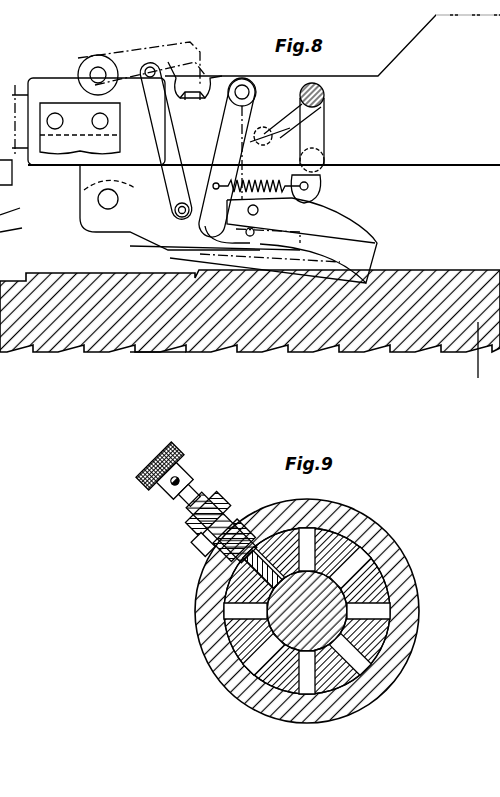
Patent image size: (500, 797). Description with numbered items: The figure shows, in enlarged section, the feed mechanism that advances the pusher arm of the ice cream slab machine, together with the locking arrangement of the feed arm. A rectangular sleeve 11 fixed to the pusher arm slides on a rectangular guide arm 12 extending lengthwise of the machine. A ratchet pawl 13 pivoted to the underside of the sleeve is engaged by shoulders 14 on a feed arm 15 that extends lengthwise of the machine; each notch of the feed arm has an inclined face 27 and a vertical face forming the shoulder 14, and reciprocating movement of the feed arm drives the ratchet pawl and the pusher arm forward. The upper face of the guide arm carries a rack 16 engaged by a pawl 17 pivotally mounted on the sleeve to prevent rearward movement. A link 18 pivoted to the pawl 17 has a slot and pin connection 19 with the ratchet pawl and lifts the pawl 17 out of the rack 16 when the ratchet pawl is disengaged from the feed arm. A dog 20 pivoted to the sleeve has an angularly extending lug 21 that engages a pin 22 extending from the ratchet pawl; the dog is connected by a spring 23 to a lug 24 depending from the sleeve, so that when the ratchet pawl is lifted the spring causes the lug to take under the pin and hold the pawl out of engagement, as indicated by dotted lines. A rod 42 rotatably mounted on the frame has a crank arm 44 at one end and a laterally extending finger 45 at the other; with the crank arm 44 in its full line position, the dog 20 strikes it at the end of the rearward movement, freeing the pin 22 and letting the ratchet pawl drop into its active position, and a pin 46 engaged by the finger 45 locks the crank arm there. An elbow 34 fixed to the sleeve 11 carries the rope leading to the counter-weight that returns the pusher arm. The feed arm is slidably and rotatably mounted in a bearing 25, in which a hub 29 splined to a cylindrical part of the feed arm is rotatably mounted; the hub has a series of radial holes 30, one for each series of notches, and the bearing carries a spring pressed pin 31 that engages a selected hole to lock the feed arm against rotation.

In FIG. 8, the rectangular sleeve 11 is at (400, 160).
In FIG. 8, the rectangular guide arm 12 is at (22, 88).
In FIG. 8, the ratchet pawl 13 is at (365, 260).
In FIG. 8, the shoulders 14 is at (28, 276).
In FIG. 8, the feed arm 15 is at (475, 363).
In FIG. 8, the rack 16 is at (212, 80).
In FIG. 8, the pawl 17 is at (178, 68).
In FIG. 8, the link 18 is at (160, 130).
In FIG. 8, the slot and pin connection 19 is at (174, 210).
In FIG. 8, the dog 20 is at (252, 84).
In FIG. 8, the angularly extending lug 21 is at (235, 258).
In FIG. 8, the pin 22 is at (278, 232).
In FIG. 8, the spring 23 is at (272, 178).
In FIG. 8, the lug 24 is at (322, 187).
In FIG. 9, the bearing 25 is at (200, 640).
In FIG. 8, the inclined face 27 is at (186, 356).
In FIG. 9, the hub 29 is at (372, 588).
In FIG. 9, the radial holes 30 is at (302, 540).
In FIG. 9, the spring pressed pin 31 is at (262, 530).
In FIG. 8, the elbow 34 is at (70, 115).
In FIG. 8, the rod 42 is at (325, 95).
In FIG. 8, the crank arm 44 is at (300, 136).
In FIG. 8, the laterally extending finger 45 is at (23, 202).
In FIG. 8, the pin 46 is at (23, 226).